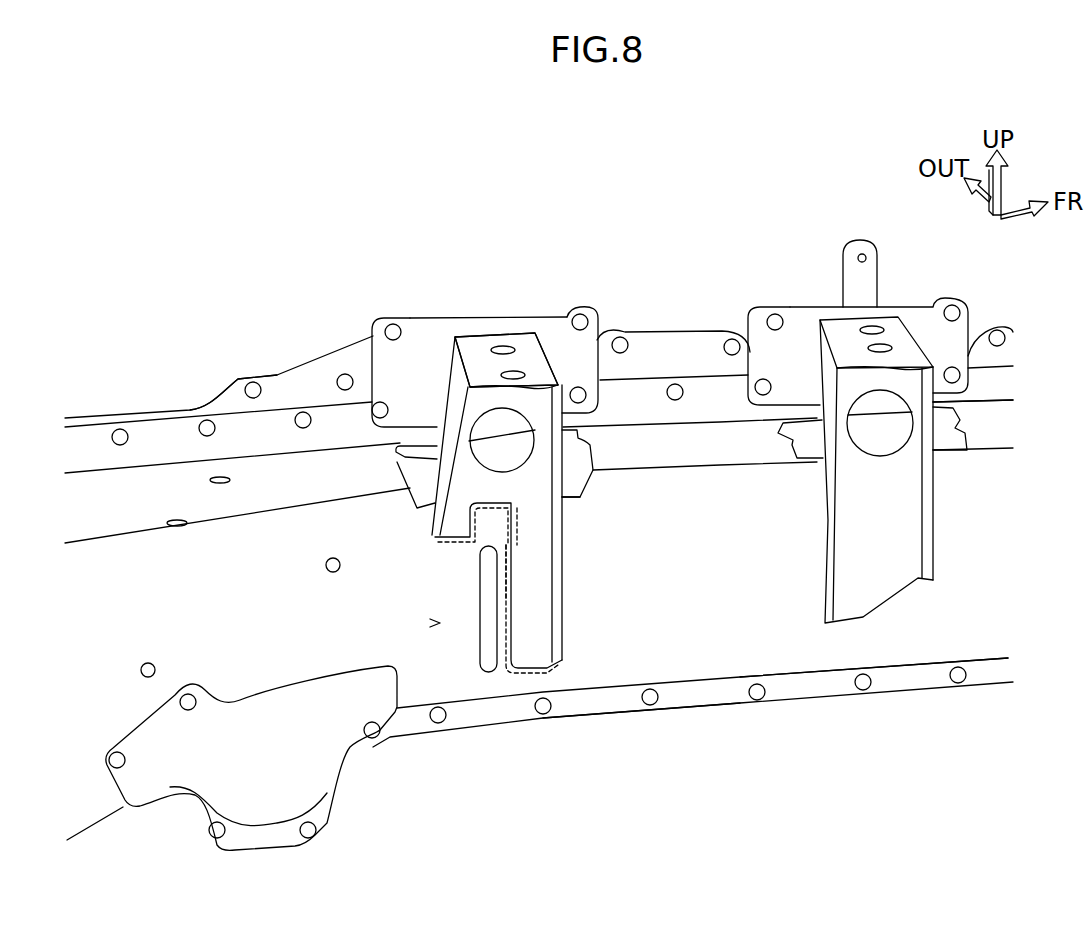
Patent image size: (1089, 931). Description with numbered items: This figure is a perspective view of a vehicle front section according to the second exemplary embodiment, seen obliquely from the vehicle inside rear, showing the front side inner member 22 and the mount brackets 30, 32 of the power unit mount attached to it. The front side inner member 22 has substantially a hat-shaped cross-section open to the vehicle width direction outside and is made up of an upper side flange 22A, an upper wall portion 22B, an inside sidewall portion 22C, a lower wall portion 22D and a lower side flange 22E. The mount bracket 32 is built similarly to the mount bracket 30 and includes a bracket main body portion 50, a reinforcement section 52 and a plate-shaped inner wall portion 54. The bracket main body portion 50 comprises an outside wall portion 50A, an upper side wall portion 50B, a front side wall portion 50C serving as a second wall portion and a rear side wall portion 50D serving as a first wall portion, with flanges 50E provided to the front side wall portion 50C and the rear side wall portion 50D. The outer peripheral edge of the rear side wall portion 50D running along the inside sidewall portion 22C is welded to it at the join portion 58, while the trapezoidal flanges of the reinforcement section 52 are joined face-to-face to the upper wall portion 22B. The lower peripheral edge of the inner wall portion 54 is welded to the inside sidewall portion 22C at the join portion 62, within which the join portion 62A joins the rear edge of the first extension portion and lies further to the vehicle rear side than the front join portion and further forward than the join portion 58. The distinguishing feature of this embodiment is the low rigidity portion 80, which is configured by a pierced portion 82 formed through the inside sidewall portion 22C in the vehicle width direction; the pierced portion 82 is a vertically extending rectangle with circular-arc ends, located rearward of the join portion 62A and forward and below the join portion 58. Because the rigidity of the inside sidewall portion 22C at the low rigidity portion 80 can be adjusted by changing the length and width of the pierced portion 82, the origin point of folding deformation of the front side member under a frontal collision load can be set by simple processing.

The front side inner member 22 is at (965, 547).
The upper side flange 22A is at (323, 413).
The upper wall portion 22B is at (278, 478).
The inside sidewall portion 22C is at (452, 652).
The lower wall portion 22D is at (817, 673).
The lower side flange 22E is at (600, 703).
The mount bracket 30 is at (933, 307).
The mount bracket 32 is at (517, 265).
The bracket main body portion 50 is at (489, 430).
The outside wall portion 50A is at (545, 328).
The upper side wall portion 50B is at (606, 328).
The front side wall portion 50C is at (563, 512).
The rear side wall portion 50D is at (451, 402).
The flanges 50E is at (406, 447).
The reinforcement section 52 is at (403, 493).
The inner wall portion 54 is at (538, 405).
The join portion 58 is at (425, 528).
The join portion 62 is at (513, 608).
The join portion 62A is at (510, 567).
The low rigidity portion 80 is at (440, 623).
The pierced portion 82 is at (487, 604).